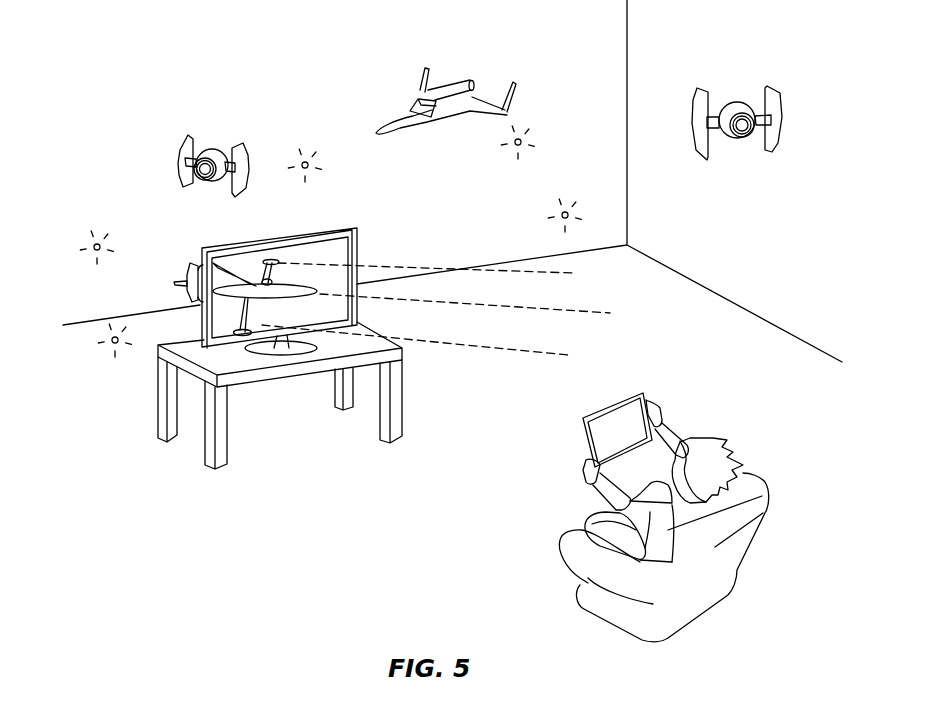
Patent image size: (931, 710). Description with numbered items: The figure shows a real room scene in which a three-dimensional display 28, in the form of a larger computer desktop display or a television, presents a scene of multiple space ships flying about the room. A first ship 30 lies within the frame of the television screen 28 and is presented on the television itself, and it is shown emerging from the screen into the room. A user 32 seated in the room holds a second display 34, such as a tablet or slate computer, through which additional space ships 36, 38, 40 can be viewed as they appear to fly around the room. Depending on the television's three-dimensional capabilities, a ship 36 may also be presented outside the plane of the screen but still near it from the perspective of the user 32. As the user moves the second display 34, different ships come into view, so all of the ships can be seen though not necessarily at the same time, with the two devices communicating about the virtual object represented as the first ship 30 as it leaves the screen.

The three-dimensional display 28 is at (357, 246).
The first ship 30 is at (179, 267).
The user 32 is at (588, 523).
The second display 34 is at (647, 397).
The space ship 36 is at (445, 78).
The space ship 38 is at (742, 100).
The space ship 40 is at (215, 152).